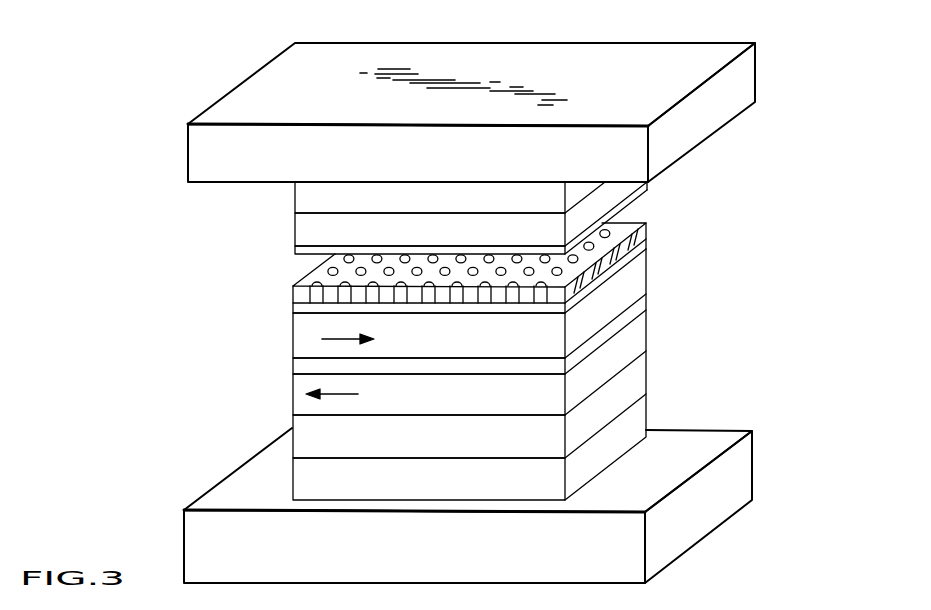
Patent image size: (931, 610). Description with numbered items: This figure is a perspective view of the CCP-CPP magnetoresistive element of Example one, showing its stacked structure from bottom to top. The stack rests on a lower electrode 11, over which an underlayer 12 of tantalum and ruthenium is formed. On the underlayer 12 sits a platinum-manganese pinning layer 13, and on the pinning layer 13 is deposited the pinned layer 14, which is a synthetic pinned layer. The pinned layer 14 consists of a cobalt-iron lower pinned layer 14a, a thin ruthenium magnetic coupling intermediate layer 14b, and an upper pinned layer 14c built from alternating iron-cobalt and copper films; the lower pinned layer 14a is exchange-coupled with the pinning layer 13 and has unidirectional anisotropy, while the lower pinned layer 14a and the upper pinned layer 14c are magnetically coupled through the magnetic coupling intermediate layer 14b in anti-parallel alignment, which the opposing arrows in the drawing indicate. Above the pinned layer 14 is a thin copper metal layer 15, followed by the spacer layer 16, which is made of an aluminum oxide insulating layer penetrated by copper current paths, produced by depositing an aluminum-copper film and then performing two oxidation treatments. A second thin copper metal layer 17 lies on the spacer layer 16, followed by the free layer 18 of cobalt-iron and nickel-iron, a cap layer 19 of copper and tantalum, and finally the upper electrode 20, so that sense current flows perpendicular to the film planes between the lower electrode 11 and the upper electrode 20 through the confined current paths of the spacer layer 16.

The lower electrode 11 is at (740, 472).
The underlayer 12 is at (638, 410).
The pinning layer 13 is at (638, 380).
The pinned layer 14 is at (476, 344).
The lower pinned layer 14a is at (636, 337).
The magnetic coupling intermediate layer 14b is at (640, 307).
The upper pinned layer 14c is at (640, 283).
The metal layer 15 is at (640, 252).
The spacer layer 16 is at (660, 228).
The metal layer 17 is at (307, 250).
The free layer 18 is at (306, 232).
The cap layer 19 is at (306, 200).
The upper electrode 20 is at (747, 80).